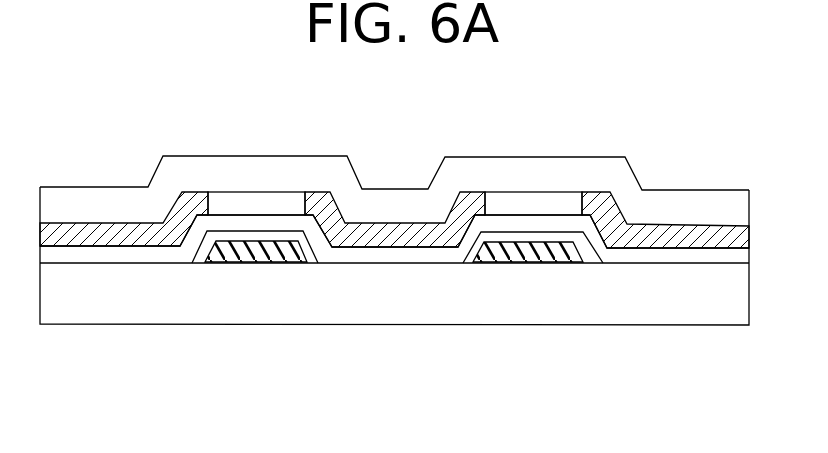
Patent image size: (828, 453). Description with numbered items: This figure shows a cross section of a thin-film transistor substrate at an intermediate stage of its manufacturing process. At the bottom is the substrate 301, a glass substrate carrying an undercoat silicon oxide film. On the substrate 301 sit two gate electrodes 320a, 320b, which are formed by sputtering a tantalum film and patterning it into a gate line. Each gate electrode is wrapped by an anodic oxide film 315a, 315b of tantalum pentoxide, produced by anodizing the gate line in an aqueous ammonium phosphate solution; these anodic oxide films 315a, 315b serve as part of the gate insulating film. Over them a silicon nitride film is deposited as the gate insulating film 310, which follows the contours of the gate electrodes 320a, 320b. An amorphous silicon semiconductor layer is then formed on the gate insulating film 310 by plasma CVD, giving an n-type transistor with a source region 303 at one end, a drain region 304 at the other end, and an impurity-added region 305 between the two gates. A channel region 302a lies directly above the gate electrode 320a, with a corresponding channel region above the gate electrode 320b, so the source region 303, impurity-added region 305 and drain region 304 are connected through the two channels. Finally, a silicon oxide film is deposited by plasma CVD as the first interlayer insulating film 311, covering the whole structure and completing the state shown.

The substrate 301 is at (652, 303).
The gate insulating film 310 is at (148, 262).
The first interlayer insulating film 311 is at (202, 170).
The source region 303 is at (138, 233).
The drain region 304 is at (687, 227).
The impurity-added region 305 is at (385, 232).
The channel region 302a is at (243, 203).
The anodic oxide film 315a is at (207, 262).
The anodic oxide film 315b is at (478, 262).
The gate electrode 320a is at (248, 257).
The gate electrode 320b is at (528, 255).